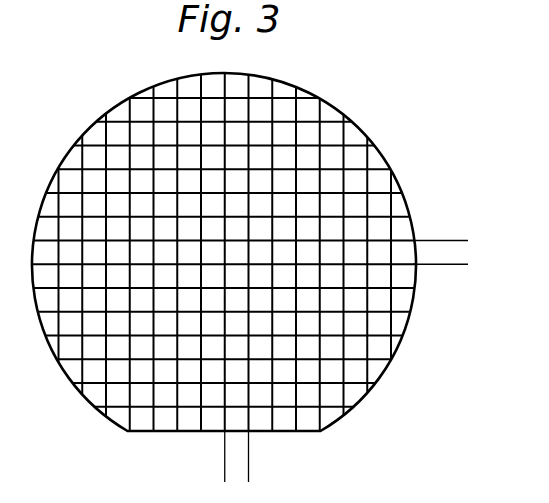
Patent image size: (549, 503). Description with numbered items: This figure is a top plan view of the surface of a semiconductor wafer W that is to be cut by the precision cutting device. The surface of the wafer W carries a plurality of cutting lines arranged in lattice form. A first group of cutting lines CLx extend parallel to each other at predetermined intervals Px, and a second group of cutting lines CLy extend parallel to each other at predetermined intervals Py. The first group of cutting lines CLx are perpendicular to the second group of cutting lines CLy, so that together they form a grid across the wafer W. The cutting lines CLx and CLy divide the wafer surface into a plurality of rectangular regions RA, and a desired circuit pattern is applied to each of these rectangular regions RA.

The wafer W is at (360, 124).
The second group of cutting lines CLy is at (356, 210).
The first group of cutting lines CLx is at (200, 396).
The predetermined intervals Py is at (455, 283).
The predetermined intervals Px is at (205, 469).
The rectangular regions RA is at (330, 372).